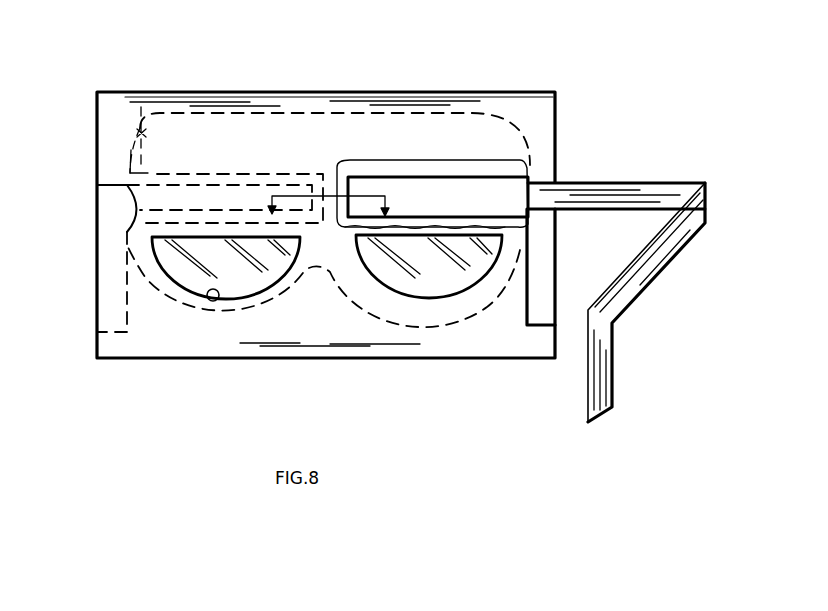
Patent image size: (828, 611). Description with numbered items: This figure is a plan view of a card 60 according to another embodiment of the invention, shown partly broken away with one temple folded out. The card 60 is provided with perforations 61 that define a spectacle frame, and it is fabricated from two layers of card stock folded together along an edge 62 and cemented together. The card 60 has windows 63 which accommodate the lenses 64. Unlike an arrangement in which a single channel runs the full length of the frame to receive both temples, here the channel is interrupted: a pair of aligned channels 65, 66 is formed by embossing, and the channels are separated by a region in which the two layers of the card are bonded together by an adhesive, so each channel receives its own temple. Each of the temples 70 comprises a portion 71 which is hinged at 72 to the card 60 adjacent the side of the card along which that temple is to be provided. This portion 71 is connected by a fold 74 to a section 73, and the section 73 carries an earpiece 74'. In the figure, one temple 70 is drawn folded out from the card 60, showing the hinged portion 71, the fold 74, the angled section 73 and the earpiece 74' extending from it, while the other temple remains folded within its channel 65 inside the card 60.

The card 60 is at (123, 352).
The perforations 61 is at (277, 343).
The edge 62 is at (224, 92).
The windows 63 is at (213, 301).
The lenses 64 is at (190, 258).
The channel 65 is at (141, 106).
The channel 66 is at (528, 178).
The temple 70 is at (683, 183).
The portion 71 is at (616, 198).
The hinge 72 is at (517, 165).
The section 73 is at (658, 264).
The fold 74 is at (386, 242).
The earpiece 74' is at (631, 357).